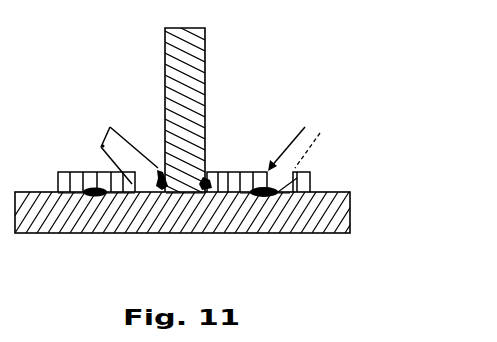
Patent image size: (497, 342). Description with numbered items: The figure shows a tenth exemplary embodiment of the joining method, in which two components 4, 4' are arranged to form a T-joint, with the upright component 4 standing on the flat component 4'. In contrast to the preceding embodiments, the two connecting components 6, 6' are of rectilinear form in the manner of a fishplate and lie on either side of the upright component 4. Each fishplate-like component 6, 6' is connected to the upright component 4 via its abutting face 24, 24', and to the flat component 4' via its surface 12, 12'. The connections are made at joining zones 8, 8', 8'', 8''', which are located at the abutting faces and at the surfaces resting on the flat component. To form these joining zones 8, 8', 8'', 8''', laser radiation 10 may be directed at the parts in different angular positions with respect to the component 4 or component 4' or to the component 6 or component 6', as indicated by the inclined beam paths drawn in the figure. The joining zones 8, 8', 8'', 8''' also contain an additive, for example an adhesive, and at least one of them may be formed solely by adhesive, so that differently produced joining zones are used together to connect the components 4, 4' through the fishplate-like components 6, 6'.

The component 4 is at (209, 112).
The component 4' is at (197, 232).
The component 6 is at (87, 149).
The component 6' is at (340, 159).
The joining zone 8 is at (185, 233).
The joining zone 8' is at (71, 239).
The joining zone 8'' is at (240, 155).
The joining zone 8''' is at (345, 185).
The processing tool / laser beam 10 is at (110, 127).
The surface 12 is at (96, 243).
The surface 12' is at (264, 238).
The abutting face 24 is at (148, 135).
The abutting face 24' is at (229, 141).